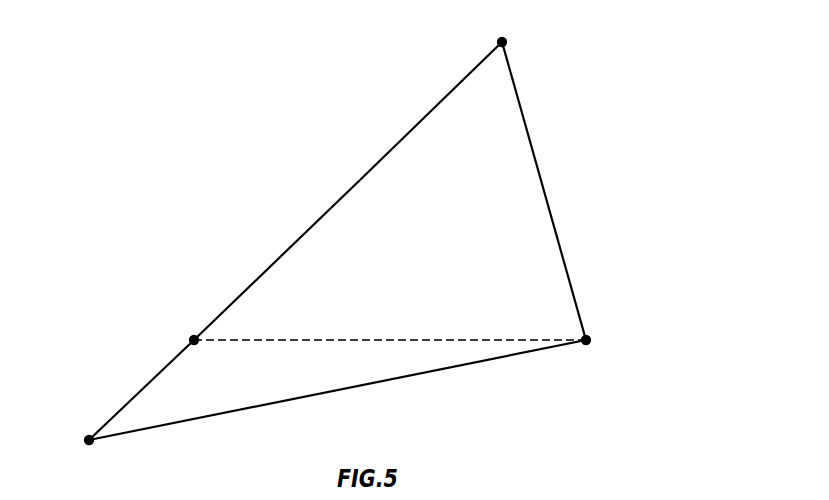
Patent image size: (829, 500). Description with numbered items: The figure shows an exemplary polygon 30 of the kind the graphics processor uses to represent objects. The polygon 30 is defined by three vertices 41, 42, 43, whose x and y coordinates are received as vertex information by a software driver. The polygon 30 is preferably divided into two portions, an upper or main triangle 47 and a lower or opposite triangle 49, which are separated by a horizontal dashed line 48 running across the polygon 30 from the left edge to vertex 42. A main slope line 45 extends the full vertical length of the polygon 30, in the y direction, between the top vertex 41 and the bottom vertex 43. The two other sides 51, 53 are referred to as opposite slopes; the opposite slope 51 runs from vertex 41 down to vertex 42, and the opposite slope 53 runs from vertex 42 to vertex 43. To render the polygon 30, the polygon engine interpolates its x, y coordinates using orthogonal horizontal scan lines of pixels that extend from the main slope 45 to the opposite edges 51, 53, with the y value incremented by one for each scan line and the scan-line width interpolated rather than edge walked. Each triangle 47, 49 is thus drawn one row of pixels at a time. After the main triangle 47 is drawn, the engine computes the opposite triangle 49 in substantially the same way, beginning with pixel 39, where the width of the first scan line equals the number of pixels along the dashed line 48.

The polygon 30 is at (250, 115).
The pixel 39 is at (168, 319).
The vertex 41 is at (526, 23).
The vertex 42 is at (610, 322).
The vertex 43 is at (66, 418).
The main slope line 45 is at (277, 256).
The main triangle 47 is at (431, 111).
The horizontal dashed line 48 is at (390, 315).
The opposite triangle 49 is at (141, 390).
The opposite slope 51 is at (549, 191).
The opposite slope 53 is at (337, 390).